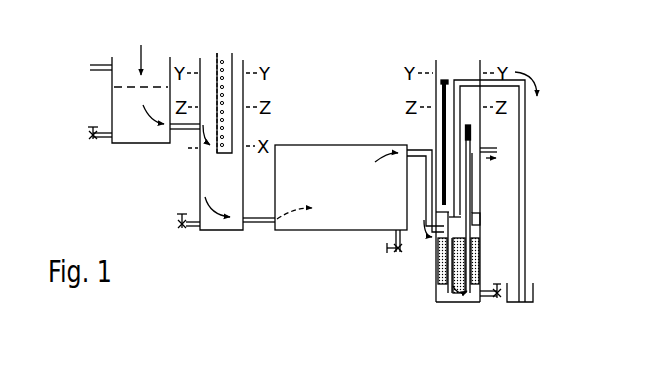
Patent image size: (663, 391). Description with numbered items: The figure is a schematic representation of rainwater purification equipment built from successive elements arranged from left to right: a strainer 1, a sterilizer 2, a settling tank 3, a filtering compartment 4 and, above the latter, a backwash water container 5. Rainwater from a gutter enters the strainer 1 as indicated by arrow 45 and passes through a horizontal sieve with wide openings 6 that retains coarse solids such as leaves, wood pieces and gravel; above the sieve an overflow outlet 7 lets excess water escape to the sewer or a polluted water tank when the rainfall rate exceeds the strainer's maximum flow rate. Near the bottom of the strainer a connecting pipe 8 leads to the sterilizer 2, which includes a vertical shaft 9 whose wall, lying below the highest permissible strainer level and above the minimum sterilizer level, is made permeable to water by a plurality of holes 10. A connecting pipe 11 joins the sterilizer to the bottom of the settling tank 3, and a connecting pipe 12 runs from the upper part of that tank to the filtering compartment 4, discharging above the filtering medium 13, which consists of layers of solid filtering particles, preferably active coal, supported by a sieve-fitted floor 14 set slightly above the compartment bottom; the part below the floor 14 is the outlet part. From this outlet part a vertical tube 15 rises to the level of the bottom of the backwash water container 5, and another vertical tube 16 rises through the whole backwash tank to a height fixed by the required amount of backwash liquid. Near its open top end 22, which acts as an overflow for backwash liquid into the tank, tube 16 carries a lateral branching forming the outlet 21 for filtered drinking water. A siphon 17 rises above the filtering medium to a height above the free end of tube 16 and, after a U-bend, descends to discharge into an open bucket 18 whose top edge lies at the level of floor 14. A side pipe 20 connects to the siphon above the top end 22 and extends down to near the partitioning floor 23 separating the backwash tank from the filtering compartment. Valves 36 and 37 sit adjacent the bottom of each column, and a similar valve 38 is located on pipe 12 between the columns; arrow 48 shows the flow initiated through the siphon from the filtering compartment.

The strainer 1 is at (112, 108).
The sterilizer 2 is at (200, 178).
The settling tank 3 is at (303, 231).
The filtering compartment 4 is at (436, 259).
The backwash water container 5 is at (434, 131).
The sieve with wide openings 6 is at (153, 86).
The overflow outlet 7 is at (92, 65).
The connecting pipe 8 is at (175, 154).
The vertical shaft 9 is at (230, 73).
The holes 10 is at (223, 118).
The connecting pipe 11 is at (262, 223).
The connecting pipe 12 is at (427, 198).
The filtering medium 13 is at (478, 245).
The floor 14 is at (475, 285).
The vertical tube 15 is at (452, 278).
The vertical tube 16 is at (480, 188).
The siphon 17 is at (526, 188).
The bucket 18 is at (533, 290).
The side pipe 20 is at (447, 80).
The outlet 21 is at (497, 151).
The open top end 22 is at (468, 125).
The partitioning floor 23 is at (481, 218).
The valve 36 is at (487, 300).
The valve 37 is at (394, 238).
The valve 38 is at (186, 232).
The arrow 45 is at (141, 55).
The arrow 48 is at (527, 73).